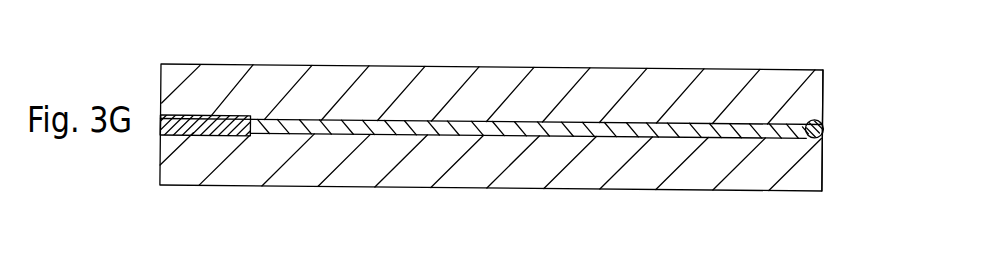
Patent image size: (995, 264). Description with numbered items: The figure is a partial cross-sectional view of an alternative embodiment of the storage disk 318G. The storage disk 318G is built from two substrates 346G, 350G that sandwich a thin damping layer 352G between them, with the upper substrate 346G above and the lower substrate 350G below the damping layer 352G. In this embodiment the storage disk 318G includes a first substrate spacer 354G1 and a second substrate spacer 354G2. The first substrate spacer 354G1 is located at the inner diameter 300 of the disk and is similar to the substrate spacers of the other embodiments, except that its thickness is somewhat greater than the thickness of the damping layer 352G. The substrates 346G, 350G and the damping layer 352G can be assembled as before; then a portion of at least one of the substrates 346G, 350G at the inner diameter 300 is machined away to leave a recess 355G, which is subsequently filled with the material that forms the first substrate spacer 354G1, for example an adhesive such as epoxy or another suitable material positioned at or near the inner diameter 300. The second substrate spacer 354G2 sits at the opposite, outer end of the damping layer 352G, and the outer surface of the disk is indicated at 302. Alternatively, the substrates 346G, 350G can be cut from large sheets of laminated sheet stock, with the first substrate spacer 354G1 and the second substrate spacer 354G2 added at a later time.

The inner diameter 300 is at (160, 158).
The outer surface / edge of lead body 302 is at (833, 100).
The storage disk 318G is at (563, 212).
The substrate 346G is at (270, 73).
The substrate 350G is at (251, 168).
The damping layer 352G is at (445, 128).
The first substrate spacer 354G1 is at (184, 128).
The second substrate spacer 354G2 is at (827, 131).
The recess 355G is at (161, 116).